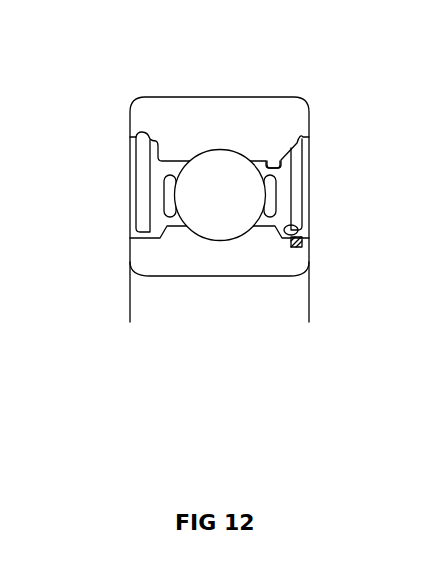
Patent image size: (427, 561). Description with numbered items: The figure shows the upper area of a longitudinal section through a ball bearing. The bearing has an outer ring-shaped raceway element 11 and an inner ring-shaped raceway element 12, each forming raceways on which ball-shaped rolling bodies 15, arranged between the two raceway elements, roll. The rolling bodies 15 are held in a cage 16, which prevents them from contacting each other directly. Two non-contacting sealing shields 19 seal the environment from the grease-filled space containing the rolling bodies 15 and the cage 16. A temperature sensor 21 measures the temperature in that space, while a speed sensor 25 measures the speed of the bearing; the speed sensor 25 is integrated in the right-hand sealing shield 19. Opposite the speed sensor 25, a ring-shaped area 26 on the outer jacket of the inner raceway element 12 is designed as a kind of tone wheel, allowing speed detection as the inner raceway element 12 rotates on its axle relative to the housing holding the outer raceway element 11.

The outer ring-shaped raceway element 11 is at (158, 123).
The inner ring-shaped raceway element 12 is at (162, 250).
The ball-shaped rolling bodies 15 is at (219, 193).
The cage 16 is at (170, 184).
The non-contacting sealing shields 19 is at (143, 185).
The temperature sensor 21 is at (280, 160).
The speed sensor 25 is at (299, 232).
The ring-shaped area 26 is at (300, 244).